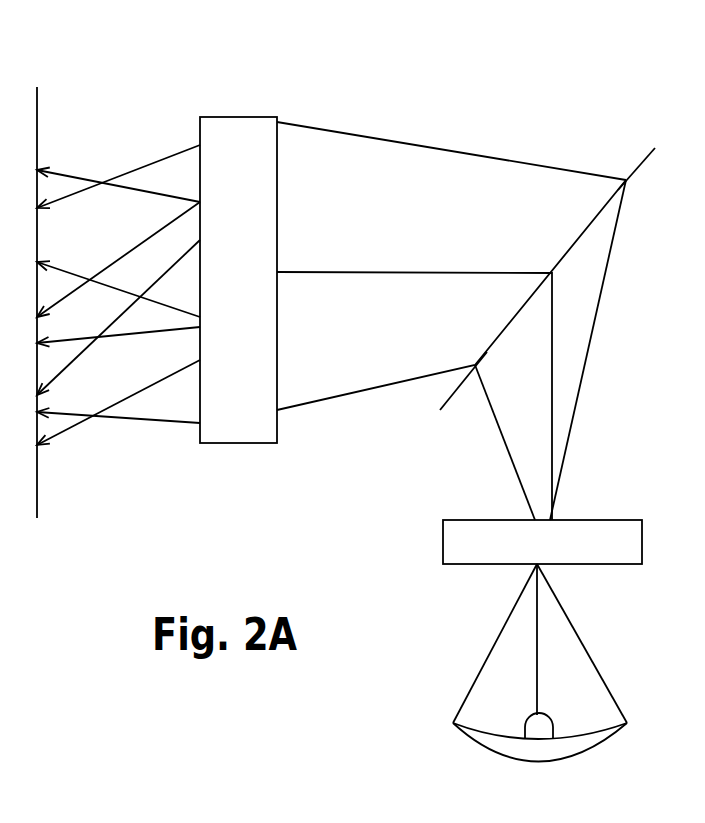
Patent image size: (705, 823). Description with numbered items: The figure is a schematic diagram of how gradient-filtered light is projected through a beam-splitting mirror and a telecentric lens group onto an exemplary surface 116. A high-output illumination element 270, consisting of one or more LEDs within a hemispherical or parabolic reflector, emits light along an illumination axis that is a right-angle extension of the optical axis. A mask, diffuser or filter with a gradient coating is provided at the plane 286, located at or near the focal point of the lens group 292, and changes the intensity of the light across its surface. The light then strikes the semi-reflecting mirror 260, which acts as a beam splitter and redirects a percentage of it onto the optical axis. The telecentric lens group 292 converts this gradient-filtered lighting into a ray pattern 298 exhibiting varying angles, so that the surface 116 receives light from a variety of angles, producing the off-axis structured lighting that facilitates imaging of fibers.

The surface 116 is at (37, 487).
The semi-reflecting mirror 260 is at (645, 163).
The illumination element 270 is at (556, 714).
The plane 286 is at (638, 547).
The lens group 292 is at (237, 110).
The ray pattern 298 is at (113, 170).